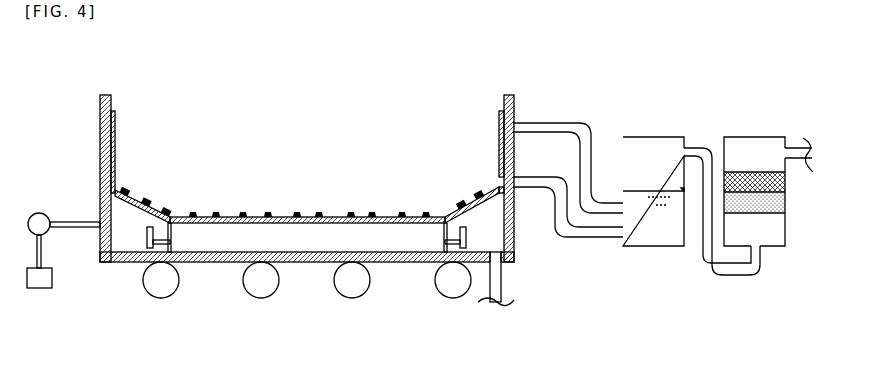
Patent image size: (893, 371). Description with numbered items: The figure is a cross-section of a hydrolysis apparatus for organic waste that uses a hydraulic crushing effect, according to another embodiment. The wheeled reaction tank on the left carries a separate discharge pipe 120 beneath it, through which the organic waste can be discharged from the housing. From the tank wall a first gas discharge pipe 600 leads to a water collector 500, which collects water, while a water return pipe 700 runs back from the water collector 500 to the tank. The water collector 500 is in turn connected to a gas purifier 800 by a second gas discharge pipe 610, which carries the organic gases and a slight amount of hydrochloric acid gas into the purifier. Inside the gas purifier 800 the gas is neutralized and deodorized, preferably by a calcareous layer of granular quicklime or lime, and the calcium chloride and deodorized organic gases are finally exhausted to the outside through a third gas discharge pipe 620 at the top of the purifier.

The discharge pipe 120 is at (505, 283).
The water collector 500 is at (653, 140).
The first gas discharge pipe 600 is at (545, 122).
The second gas discharge pipe 610 is at (727, 277).
The third gas discharge pipe 620 is at (793, 148).
The water return pipe 700 is at (588, 238).
The gas purifier 800 is at (750, 140).